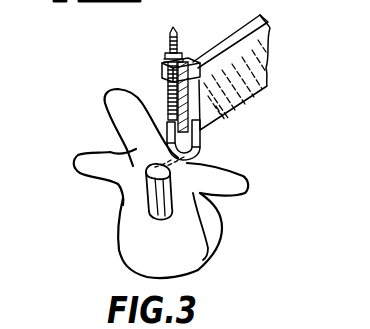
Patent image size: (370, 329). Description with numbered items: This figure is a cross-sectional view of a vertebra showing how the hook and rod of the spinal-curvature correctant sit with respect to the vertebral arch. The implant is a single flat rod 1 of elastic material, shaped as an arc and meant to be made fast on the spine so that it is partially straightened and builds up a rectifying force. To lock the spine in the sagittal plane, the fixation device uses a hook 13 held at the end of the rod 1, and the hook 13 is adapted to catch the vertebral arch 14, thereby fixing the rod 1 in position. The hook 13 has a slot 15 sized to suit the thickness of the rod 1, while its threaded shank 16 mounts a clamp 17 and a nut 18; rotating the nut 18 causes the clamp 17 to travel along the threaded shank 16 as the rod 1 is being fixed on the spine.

The flat rod 1 is at (238, 103).
The hook 13 is at (203, 148).
The vertebral arch 14 is at (116, 137).
The slot 15 is at (168, 140).
The threaded shank 16 is at (170, 78).
The clamp 17 is at (192, 56).
The nut 18 is at (166, 47).